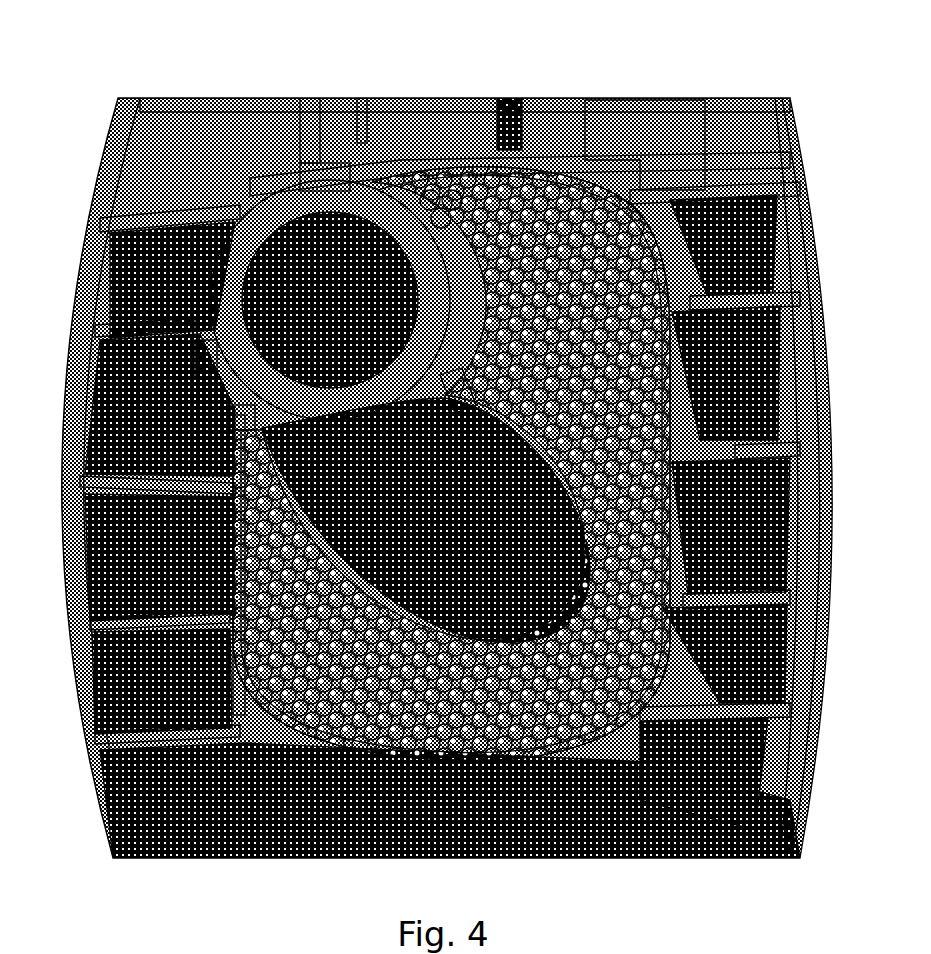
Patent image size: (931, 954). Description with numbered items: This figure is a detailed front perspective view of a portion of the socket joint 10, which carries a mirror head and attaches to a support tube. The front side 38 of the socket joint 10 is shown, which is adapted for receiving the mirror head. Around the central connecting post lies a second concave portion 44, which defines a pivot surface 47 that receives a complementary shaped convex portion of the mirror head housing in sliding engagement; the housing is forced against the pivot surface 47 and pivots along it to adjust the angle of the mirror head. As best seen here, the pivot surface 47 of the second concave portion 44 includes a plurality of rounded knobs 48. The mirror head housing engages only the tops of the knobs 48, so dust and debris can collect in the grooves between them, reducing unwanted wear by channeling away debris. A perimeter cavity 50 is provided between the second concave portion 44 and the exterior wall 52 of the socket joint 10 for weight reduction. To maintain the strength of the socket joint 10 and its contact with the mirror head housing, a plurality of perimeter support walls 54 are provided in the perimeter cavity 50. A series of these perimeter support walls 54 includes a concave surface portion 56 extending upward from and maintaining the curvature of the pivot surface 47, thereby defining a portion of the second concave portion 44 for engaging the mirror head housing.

The socket joint 10 is at (447, 478).
The front side 38 is at (540, 96).
The second concave portion 44 is at (441, 180).
The pivot surface 47 is at (566, 212).
The rounded knobs 48 is at (357, 670).
The perimeter cavity 50 is at (668, 126).
The exterior wall 52 is at (805, 698).
The perimeter support walls 54 is at (740, 305).
The concave surface portion 56 is at (663, 317).